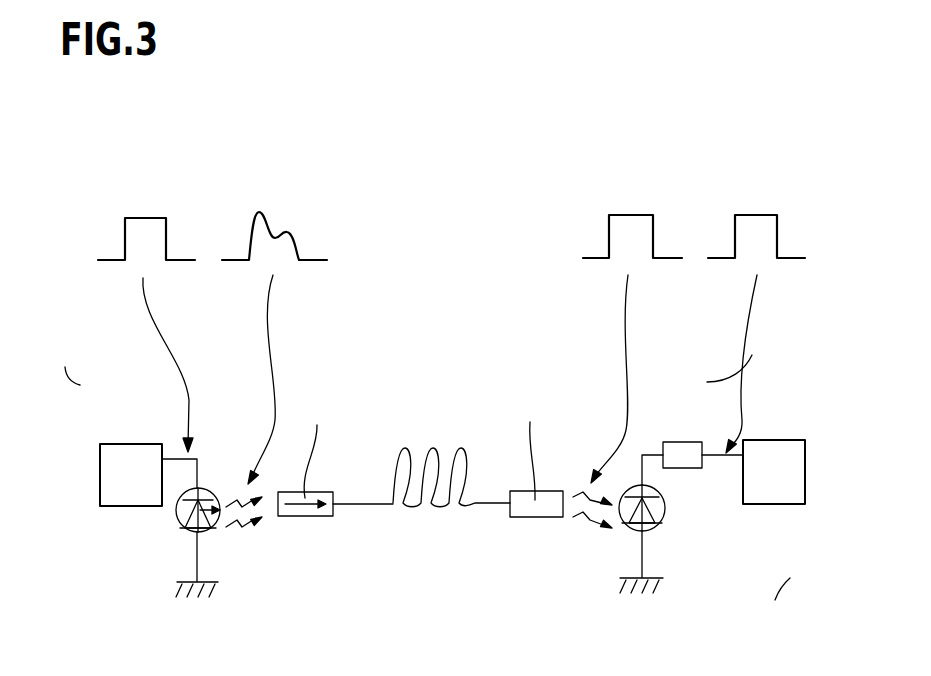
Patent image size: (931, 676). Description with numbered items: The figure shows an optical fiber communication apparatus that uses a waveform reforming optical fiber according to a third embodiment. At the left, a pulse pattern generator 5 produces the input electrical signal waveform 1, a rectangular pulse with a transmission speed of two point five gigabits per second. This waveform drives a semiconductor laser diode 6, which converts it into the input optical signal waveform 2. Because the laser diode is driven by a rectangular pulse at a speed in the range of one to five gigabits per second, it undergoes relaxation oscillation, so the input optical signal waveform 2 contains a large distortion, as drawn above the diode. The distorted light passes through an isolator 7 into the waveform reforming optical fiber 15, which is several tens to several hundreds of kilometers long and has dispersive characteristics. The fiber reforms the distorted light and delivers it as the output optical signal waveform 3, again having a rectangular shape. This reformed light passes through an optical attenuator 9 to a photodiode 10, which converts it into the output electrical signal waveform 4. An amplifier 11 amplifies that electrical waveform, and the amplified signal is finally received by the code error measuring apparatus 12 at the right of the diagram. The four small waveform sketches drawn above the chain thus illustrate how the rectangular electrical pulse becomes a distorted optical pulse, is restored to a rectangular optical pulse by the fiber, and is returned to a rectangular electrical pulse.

The input electrical signal waveform 1 is at (143, 205).
The input optical signal waveform 2 is at (279, 205).
The output optical signal waveform 3 is at (627, 200).
The output electrical signal waveform 4 is at (757, 205).
The pulse pattern generator 5 is at (131, 443).
The semiconductor laser diode 6 is at (188, 528).
The isolator 7 is at (303, 516).
The optical attenuator 9 is at (540, 517).
The photodiode 10 is at (665, 518).
The amplifier 11 is at (684, 442).
The code error measuring apparatus 12 is at (770, 504).
The waveform reforming optical fiber 15 is at (445, 510).